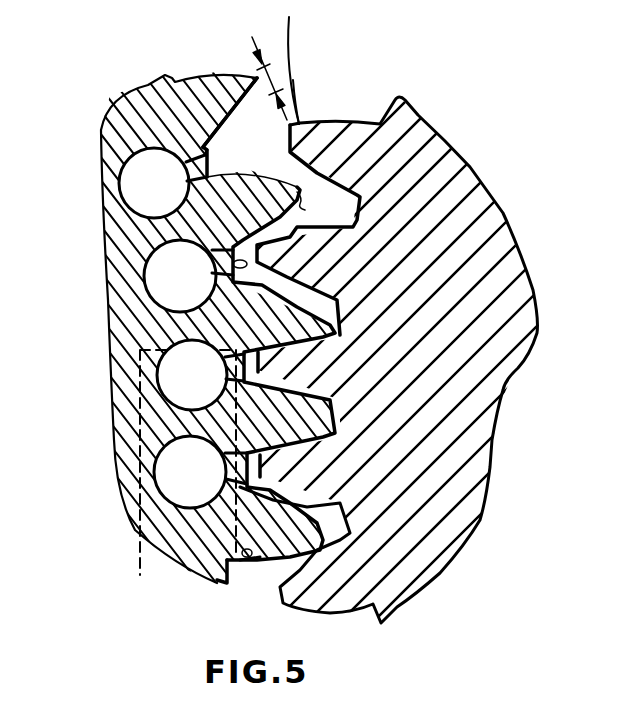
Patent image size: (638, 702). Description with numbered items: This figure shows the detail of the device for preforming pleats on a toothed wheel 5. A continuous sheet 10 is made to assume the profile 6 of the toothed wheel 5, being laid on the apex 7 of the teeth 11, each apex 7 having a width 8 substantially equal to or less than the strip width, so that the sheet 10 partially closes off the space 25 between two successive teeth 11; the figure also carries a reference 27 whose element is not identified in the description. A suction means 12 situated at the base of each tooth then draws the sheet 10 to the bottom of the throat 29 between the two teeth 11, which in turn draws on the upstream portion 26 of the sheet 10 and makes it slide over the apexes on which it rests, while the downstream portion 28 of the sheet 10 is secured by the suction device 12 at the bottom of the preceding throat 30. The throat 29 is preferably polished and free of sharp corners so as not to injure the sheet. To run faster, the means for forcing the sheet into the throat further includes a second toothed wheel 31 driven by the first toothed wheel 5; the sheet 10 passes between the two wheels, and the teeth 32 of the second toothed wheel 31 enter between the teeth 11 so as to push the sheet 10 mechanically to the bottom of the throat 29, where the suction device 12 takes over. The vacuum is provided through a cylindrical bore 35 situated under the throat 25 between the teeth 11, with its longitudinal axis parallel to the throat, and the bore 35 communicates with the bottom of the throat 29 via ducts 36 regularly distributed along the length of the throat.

The toothed wheel 5 is at (123, 503).
The profile 6 is at (235, 573).
The apex 7 is at (232, 77).
The width 8 is at (274, 80).
The sheet 10 is at (299, 37).
The teeth 11 is at (268, 553).
The suction means 12 is at (165, 462).
The space 25 is at (153, 228).
The upstream portion 26 is at (299, 70).
The tooth gap 27 is at (320, 205).
The downstream portion 28 is at (140, 350).
The throat 29 is at (215, 275).
The preceding throat 30 is at (225, 355).
The second toothed wheel 31 is at (478, 232).
The teeth 32 is at (305, 266).
The cylindrical bore 35 is at (133, 192).
The ducts 36 is at (120, 180).